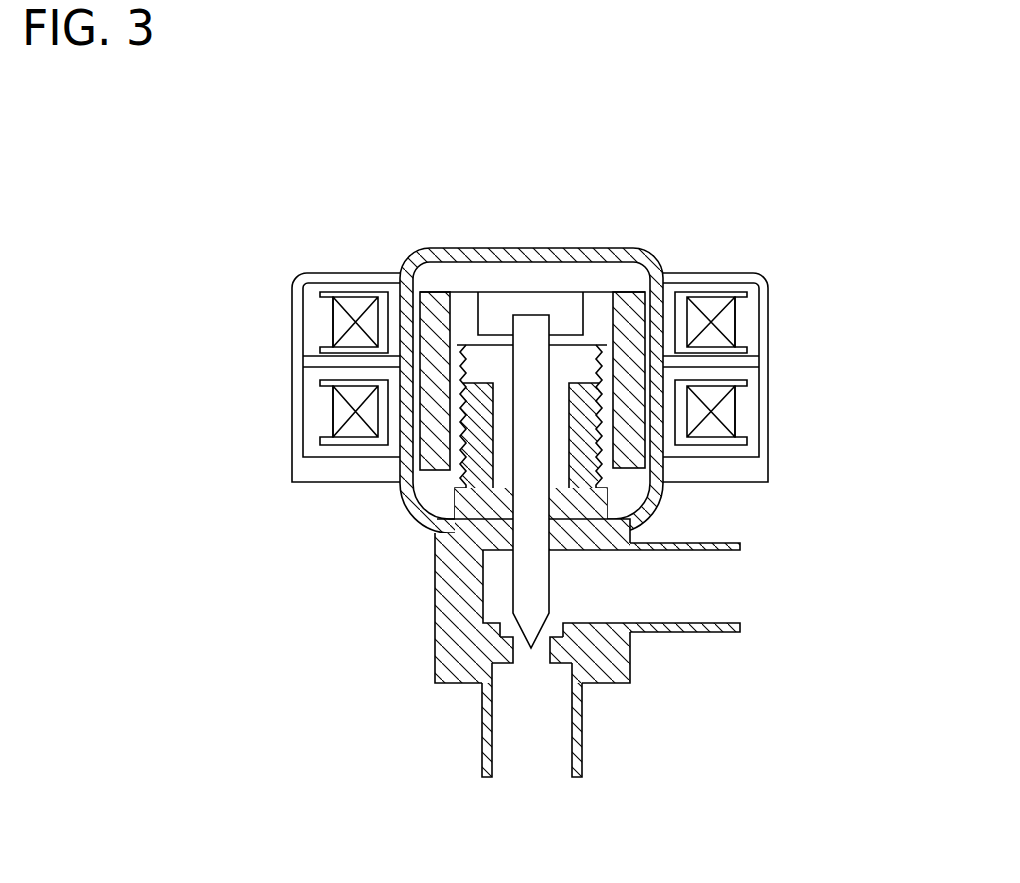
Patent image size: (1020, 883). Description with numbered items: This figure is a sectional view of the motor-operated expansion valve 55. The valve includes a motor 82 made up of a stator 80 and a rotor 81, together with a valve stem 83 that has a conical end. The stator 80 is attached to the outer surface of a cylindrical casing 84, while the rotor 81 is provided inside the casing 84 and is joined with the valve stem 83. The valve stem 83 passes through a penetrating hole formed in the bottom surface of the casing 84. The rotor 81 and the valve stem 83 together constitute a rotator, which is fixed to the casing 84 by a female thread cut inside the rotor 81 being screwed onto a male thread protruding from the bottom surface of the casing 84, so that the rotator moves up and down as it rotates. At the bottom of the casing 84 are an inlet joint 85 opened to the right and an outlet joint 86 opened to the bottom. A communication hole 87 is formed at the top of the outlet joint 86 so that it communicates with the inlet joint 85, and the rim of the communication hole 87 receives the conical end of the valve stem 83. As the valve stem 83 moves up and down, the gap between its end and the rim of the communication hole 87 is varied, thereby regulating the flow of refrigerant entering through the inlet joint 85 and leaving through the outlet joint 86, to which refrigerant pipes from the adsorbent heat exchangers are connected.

The motor-operated expansion valve 55 is at (270, 222).
The stator 80 is at (720, 320).
The rotor 81 is at (628, 291).
The motor 82 is at (869, 226).
The valve stem 83 is at (528, 532).
The cylindrical casing 84 is at (456, 248).
The inlet joint 85 is at (708, 633).
The outlet joint 86 is at (582, 748).
The communication hole 87 is at (531, 660).